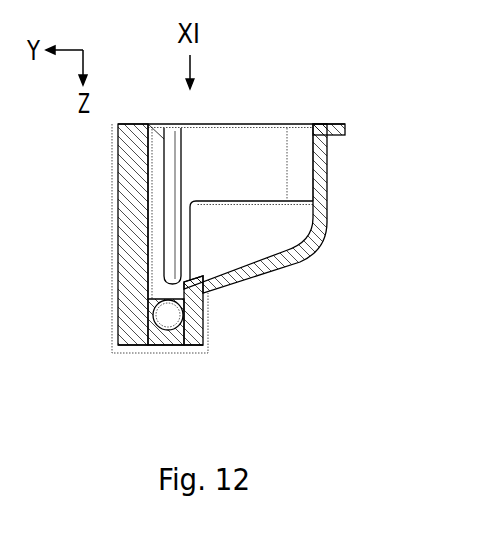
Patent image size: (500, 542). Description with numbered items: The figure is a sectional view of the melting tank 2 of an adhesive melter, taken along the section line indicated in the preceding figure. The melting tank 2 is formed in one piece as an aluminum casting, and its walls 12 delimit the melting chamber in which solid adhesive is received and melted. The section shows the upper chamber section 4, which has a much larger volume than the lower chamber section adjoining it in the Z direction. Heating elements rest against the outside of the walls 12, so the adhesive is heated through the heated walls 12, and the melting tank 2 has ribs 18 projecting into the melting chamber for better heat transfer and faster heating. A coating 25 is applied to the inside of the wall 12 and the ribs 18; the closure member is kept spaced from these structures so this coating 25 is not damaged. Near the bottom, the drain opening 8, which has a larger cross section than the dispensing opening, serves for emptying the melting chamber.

The melting tank 2 is at (275, 86).
The upper chamber section 4 is at (275, 160).
The drain opening 8 is at (168, 315).
The walls 12 is at (322, 153).
The ribs 18 is at (162, 194).
The coating 25 is at (148, 152).